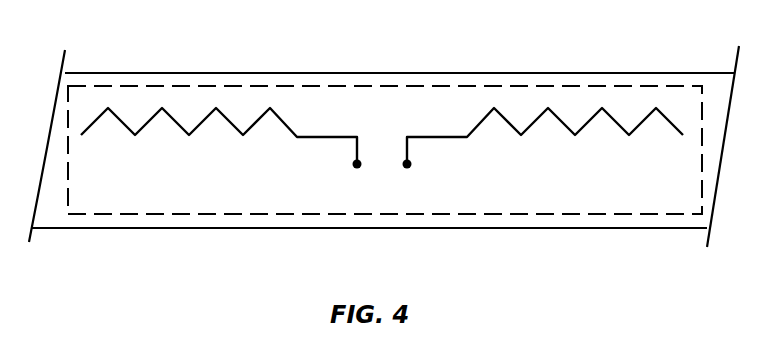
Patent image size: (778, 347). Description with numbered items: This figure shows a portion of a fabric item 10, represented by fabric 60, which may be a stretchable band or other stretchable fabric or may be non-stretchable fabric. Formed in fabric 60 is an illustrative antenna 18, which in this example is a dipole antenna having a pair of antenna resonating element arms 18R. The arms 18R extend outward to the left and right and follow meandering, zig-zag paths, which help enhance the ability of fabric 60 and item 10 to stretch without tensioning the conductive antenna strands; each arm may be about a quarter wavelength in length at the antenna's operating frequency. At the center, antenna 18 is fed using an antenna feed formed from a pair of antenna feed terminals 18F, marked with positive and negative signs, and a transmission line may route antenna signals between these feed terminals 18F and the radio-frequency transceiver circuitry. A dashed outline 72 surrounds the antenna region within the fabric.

The item 10 is at (572, 52).
The antenna 18 is at (382, 185).
The antenna resonating element arms 18R is at (150, 131).
The antenna feed terminals 18F is at (407, 169).
The fabric 60 is at (370, 229).
The antenna region 72 is at (500, 215).